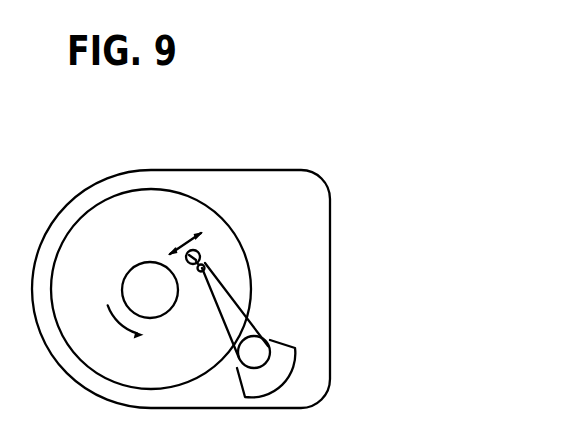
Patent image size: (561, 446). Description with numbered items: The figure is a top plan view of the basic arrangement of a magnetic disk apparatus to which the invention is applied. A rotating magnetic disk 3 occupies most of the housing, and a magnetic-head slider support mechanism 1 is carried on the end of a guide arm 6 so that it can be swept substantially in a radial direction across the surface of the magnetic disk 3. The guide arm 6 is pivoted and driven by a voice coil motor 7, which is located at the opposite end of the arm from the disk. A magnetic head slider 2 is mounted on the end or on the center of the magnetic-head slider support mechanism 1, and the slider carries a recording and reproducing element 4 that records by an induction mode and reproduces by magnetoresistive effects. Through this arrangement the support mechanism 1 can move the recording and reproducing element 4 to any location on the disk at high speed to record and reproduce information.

The magnetic-head slider support mechanism 1 is at (205, 265).
The magnetic head slider 2 is at (184, 246).
The magnetic disk 3 is at (238, 237).
The recording and reproducing element 4 is at (199, 250).
The guide arm 6 is at (228, 292).
The voice coil motor 7 is at (272, 341).